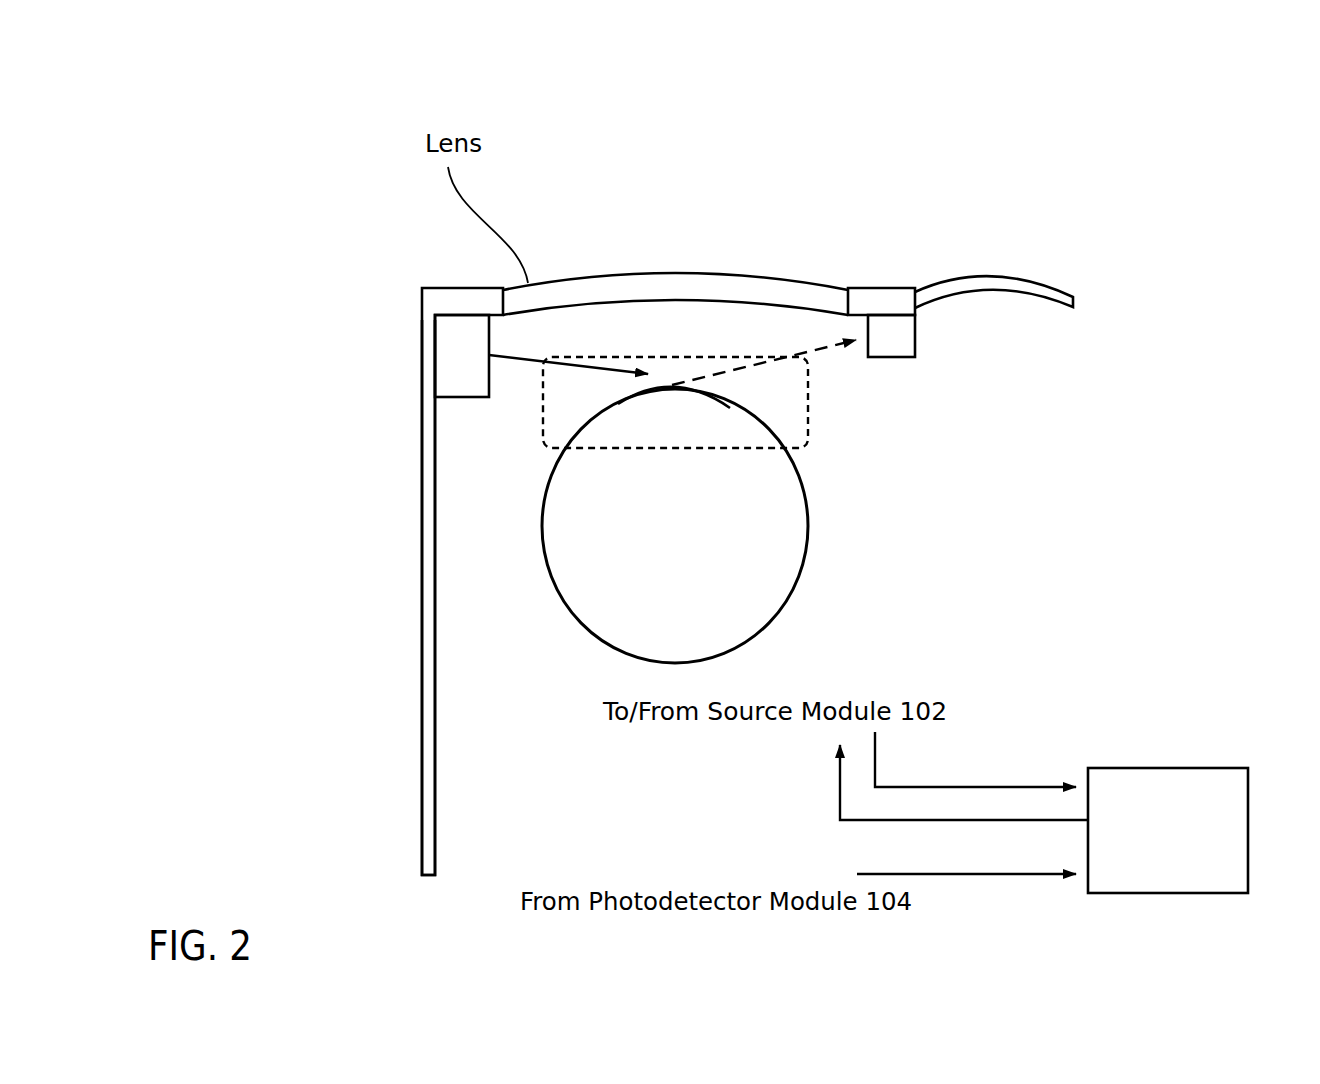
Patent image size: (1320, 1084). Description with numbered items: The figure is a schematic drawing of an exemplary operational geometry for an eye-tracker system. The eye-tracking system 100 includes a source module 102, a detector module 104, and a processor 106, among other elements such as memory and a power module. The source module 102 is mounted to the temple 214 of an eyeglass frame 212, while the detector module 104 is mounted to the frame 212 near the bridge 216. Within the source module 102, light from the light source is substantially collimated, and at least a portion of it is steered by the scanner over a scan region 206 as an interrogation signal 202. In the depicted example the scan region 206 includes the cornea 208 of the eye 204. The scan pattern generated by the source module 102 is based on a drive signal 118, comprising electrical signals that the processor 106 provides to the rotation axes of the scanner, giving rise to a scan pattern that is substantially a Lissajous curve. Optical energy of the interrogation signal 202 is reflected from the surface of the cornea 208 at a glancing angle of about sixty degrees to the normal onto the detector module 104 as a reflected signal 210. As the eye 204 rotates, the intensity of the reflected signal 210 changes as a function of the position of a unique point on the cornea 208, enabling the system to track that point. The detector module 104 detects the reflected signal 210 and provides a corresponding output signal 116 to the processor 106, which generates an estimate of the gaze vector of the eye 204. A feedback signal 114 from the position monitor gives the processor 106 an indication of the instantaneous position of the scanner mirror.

The eye-tracking system 100 is at (245, 100).
The source module 102 is at (462, 382).
The detector module 104 is at (902, 335).
The processor 106 is at (1192, 860).
The feedback signal 114 is at (1018, 785).
The output signal 116 is at (987, 878).
The drive signal 118 is at (838, 792).
The interrogation signal 202 is at (515, 358).
The eye 204 is at (725, 541).
The scan region 206 is at (753, 452).
The cornea 208 is at (700, 390).
The reflected signal 210 is at (827, 343).
The eyeglass frame 212 is at (352, 604).
The temple 214 is at (422, 556).
The bridge 216 is at (1047, 290).